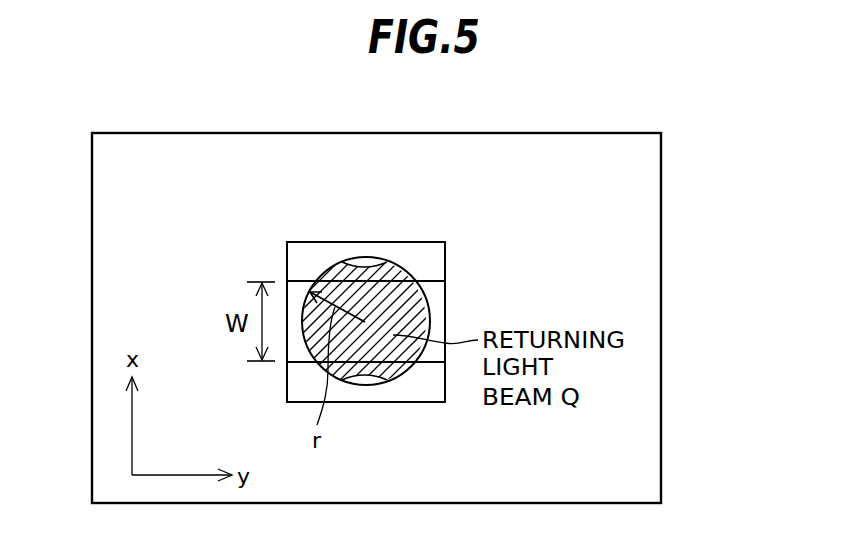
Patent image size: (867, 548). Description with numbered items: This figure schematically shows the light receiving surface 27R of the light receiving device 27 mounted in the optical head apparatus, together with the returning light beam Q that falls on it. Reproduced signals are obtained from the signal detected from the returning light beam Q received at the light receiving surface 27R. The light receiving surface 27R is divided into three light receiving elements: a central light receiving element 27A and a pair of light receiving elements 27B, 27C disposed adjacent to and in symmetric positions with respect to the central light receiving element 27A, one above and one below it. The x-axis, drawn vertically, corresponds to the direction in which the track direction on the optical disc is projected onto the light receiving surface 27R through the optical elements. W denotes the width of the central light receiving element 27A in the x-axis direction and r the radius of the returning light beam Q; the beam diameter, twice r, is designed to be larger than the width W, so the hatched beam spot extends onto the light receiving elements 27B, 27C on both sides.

The light receiving device 27 is at (662, 245).
The light receiving surface 27R is at (287, 242).
The central light receiving element 27A is at (438, 297).
The light receiving element 27B is at (418, 257).
The light receiving element 27C is at (418, 382).